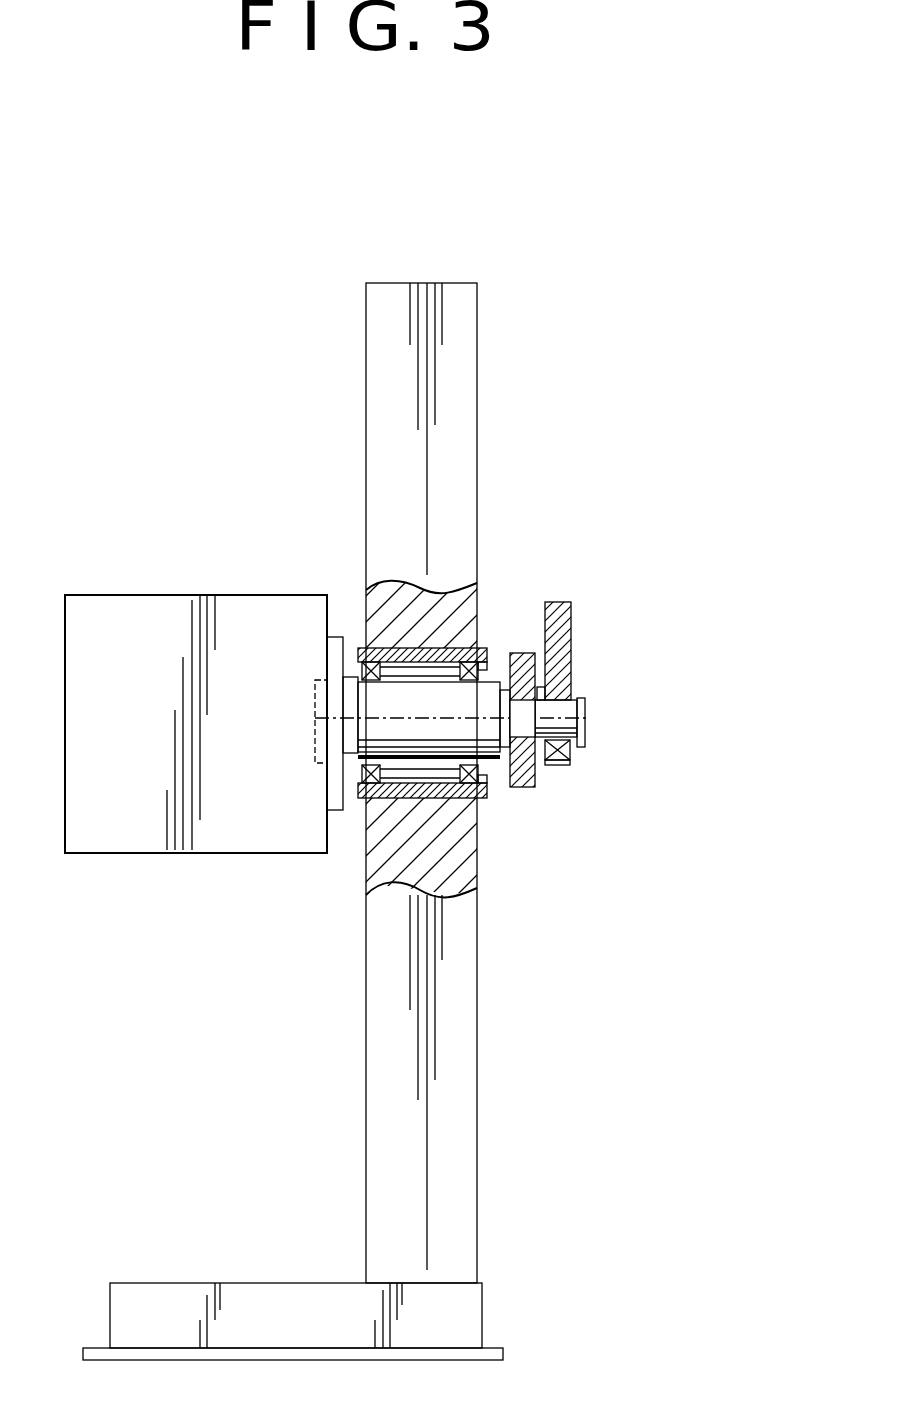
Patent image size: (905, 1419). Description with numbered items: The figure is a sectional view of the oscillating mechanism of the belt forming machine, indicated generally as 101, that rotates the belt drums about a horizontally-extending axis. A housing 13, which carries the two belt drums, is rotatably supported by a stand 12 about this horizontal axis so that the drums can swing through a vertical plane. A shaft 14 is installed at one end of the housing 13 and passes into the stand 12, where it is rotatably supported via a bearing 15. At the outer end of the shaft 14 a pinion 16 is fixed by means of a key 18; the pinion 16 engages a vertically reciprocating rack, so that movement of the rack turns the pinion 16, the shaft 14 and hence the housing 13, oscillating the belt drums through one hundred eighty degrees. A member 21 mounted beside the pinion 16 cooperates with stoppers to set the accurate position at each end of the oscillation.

The driving unit 101 is at (160, 394).
The stand 12 is at (478, 387).
The housing 13 is at (158, 595).
The shaft 14 is at (400, 735).
The bearing 15 is at (483, 642).
The pinion 16 is at (522, 792).
The key 18 is at (568, 760).
The member 21 is at (573, 612).